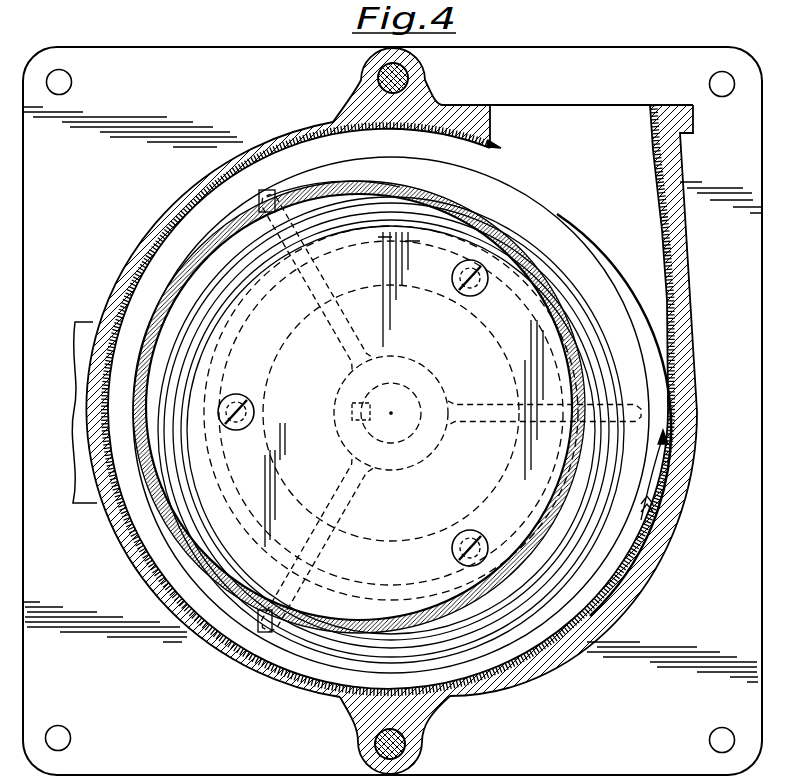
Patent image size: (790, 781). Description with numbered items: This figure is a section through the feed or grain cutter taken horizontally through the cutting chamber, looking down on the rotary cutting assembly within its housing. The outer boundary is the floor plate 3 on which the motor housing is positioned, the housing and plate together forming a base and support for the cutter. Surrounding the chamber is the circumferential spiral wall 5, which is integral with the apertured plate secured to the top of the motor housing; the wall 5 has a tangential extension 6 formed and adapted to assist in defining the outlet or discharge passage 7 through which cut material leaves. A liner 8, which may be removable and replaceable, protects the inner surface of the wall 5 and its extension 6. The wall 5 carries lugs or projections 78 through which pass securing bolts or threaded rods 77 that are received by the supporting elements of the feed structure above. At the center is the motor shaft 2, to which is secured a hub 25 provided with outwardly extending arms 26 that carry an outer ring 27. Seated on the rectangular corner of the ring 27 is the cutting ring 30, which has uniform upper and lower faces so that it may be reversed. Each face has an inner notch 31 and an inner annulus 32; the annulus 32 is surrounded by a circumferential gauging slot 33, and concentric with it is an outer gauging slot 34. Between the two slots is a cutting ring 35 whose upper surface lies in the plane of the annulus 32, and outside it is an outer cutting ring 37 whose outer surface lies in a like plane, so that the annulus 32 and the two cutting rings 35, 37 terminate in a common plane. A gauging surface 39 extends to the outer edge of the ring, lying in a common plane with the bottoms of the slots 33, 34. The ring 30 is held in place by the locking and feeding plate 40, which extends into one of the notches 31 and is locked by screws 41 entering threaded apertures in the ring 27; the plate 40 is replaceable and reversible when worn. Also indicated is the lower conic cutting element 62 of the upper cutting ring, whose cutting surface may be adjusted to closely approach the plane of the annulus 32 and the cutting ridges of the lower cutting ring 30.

The motor shaft 2 is at (413, 423).
The floor plate 3 is at (638, 55).
The circumferential spiral wall 5 is at (123, 557).
The tangential extension 6 is at (683, 257).
The outlet or discharge passage 7 is at (570, 123).
The liner 8 is at (502, 143).
The hub 25 is at (428, 455).
The arms 26 is at (330, 279).
The outer ring 27 is at (493, 335).
The cutting ring 30 is at (567, 220).
The inner notch 31 is at (220, 374).
The inner annulus 32 is at (257, 277).
The circumferential gauging slot 33 is at (232, 292).
The outer gauging slot 34 is at (190, 328).
The cutting ring 35 is at (210, 310).
The outer cutting ring 37 is at (170, 350).
The gauging surface 39 is at (391, 430).
The locking and feeding plate 40 is at (556, 338).
The screws 41 is at (254, 410).
The lower conic cutting element 62 is at (318, 188).
The securing bolts or threaded rods 77 is at (410, 72).
The lugs or projections 78 is at (425, 85).